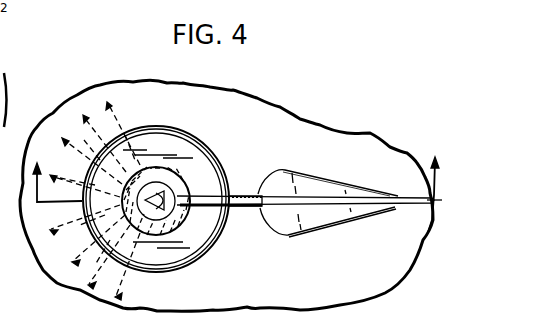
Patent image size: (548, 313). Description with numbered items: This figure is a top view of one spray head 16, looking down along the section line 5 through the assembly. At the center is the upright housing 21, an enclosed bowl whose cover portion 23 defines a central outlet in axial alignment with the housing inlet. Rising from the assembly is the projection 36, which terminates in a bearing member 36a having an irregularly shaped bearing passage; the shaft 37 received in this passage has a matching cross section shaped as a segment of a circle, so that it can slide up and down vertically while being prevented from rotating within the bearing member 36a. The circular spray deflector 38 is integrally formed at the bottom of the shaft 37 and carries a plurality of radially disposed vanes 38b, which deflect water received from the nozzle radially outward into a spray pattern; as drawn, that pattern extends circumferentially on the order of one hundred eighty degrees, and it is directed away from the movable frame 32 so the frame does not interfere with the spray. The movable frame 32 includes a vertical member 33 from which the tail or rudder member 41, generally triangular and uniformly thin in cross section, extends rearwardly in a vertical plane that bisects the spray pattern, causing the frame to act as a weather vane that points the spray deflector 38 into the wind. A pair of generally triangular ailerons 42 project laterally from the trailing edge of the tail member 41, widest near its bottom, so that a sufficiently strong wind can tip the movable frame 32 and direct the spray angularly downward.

The section line 5- 5 is at (237, 181).
The spray head 16 is at (218, 137).
The upright housing 21 is at (192, 128).
The cover portion 23 is at (208, 154).
The movable frame 32 is at (361, 197).
The vertical member 33 is at (262, 192).
The projection 36 is at (220, 207).
The bearing member 36a is at (155, 185).
The shaft 37 is at (161, 198).
The spray deflector 38 is at (184, 231).
The radially disposed vanes 38b is at (100, 205).
The tail member 41 is at (318, 198).
The ailerons 42 is at (295, 173).